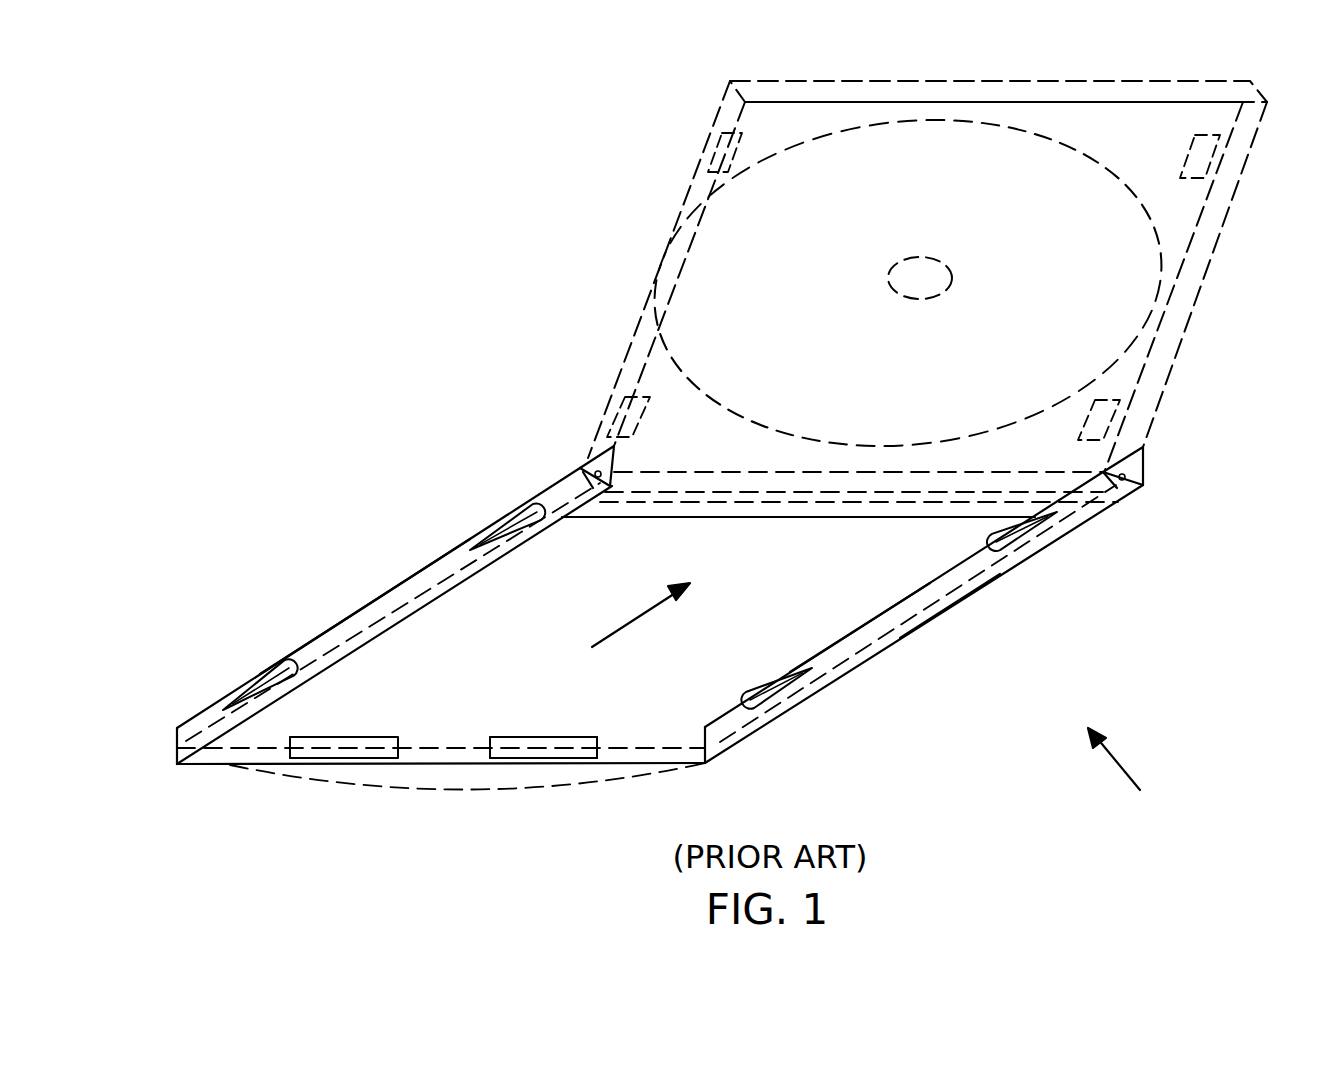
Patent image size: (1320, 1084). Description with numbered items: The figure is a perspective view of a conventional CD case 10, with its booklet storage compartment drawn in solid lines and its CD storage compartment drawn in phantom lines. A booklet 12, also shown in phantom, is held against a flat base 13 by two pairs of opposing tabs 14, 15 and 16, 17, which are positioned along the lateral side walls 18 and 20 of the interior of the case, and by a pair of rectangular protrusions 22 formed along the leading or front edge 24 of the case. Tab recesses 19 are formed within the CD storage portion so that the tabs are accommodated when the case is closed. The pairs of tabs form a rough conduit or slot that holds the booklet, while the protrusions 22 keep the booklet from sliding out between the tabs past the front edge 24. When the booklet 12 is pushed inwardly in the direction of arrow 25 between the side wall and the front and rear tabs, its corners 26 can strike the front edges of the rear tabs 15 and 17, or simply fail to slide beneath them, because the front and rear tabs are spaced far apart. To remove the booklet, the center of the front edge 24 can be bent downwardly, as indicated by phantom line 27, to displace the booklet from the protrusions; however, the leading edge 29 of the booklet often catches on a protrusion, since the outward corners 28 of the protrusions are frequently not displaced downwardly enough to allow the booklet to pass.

The CD case 10 is at (1129, 776).
The booklet 12 is at (368, 623).
The flat base 13 is at (847, 615).
The tab 14 is at (265, 692).
The rear tab 15 is at (513, 524).
The tab 16 is at (758, 675).
The rear tab 17 is at (1038, 518).
The lateral side wall 18 is at (404, 592).
The tab recesses 19 is at (745, 162).
The lateral side wall 20 is at (958, 580).
The rectangular protrusions 22 is at (333, 752).
The front edge 24 is at (295, 738).
The arrow 25 is at (620, 630).
The corners 26 is at (558, 500).
The phantom line 27 is at (457, 788).
The outward corners 28 is at (597, 745).
The leading edge 29 is at (432, 751).